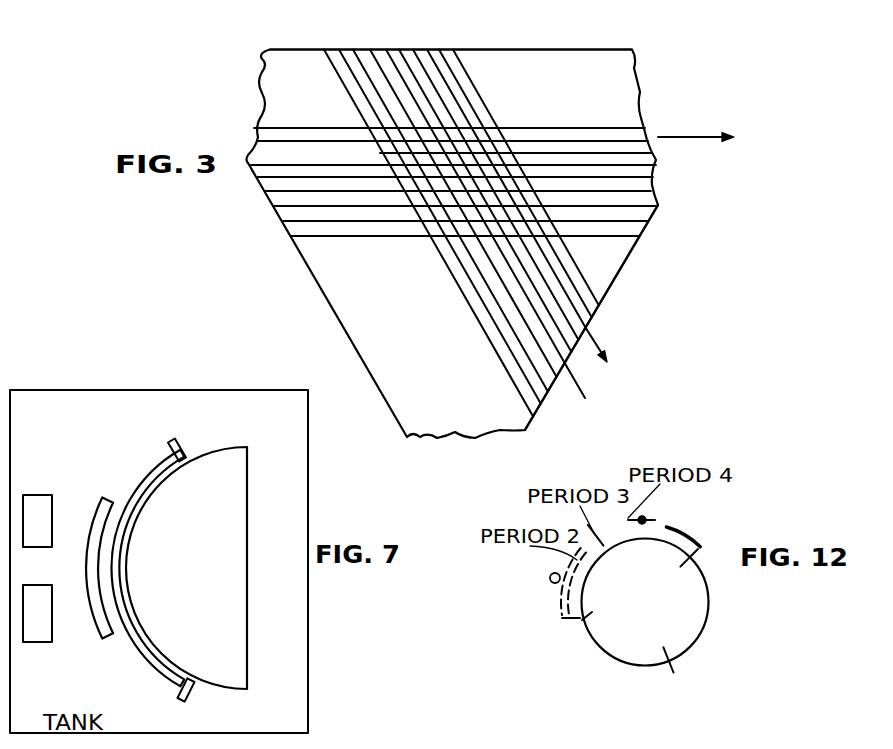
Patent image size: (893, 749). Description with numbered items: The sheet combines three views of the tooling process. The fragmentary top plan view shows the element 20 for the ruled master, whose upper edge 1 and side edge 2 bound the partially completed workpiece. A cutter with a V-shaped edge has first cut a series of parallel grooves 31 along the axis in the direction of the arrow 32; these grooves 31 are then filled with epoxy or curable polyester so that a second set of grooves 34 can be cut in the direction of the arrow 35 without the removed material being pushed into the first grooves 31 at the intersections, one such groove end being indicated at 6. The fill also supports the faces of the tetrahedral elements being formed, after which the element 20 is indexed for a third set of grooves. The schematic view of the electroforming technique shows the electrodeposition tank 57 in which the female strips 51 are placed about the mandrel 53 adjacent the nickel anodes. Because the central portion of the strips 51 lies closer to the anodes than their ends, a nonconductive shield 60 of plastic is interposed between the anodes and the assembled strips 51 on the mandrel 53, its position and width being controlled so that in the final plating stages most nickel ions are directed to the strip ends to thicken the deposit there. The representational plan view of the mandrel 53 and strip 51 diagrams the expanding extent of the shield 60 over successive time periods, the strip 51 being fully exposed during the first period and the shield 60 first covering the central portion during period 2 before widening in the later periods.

In FIG. 3, the element 20 is at (291, 44).
In FIG. 3, the top edge of fabric 1 is at (583, 49).
In FIG. 3, the second set of grooves 34 is at (435, 49).
In FIG. 3, the first series of parallel grooves 31 is at (618, 137).
In FIG. 3, the arrow 32 is at (684, 146).
In FIG. 3, the period 2 is at (672, 246).
In FIG. 3, the arrow 35 is at (603, 339).
In FIG. 3, the warp yarn end 6 is at (583, 386).
In FIG. 7, the electrodeposition tank 57 is at (316, 644).
In FIG. 7, the mandrel 53 is at (233, 522).
In FIG. 12, the mandrel 53 is at (687, 613).
In FIG. 7, the female strips 51 is at (182, 438).
In FIG. 7, the shield 60 is at (98, 508).